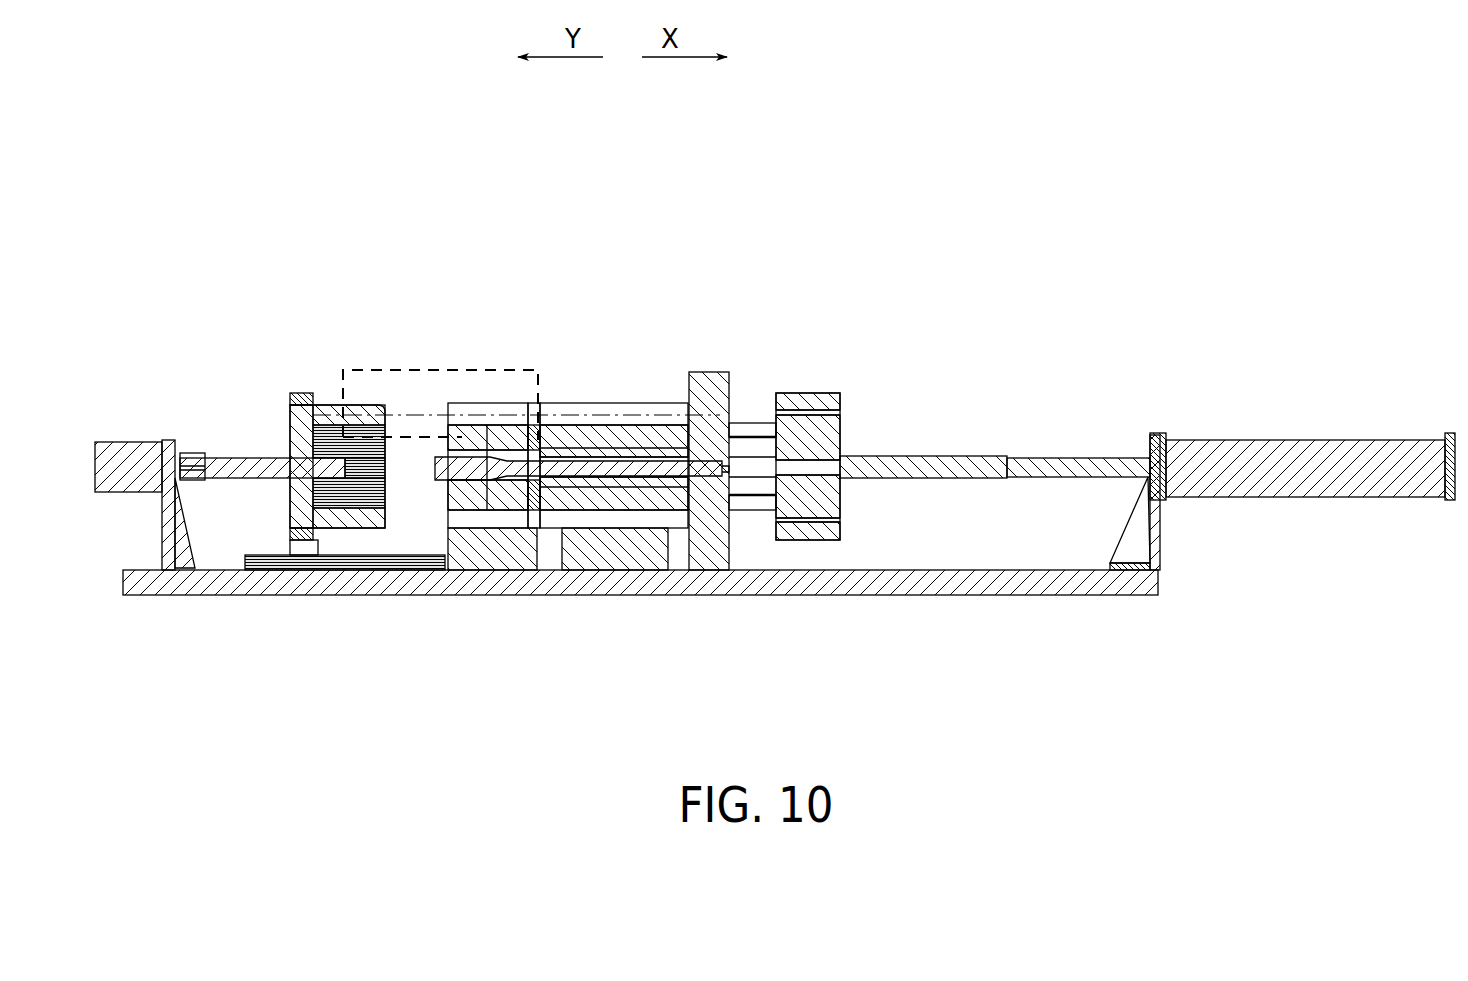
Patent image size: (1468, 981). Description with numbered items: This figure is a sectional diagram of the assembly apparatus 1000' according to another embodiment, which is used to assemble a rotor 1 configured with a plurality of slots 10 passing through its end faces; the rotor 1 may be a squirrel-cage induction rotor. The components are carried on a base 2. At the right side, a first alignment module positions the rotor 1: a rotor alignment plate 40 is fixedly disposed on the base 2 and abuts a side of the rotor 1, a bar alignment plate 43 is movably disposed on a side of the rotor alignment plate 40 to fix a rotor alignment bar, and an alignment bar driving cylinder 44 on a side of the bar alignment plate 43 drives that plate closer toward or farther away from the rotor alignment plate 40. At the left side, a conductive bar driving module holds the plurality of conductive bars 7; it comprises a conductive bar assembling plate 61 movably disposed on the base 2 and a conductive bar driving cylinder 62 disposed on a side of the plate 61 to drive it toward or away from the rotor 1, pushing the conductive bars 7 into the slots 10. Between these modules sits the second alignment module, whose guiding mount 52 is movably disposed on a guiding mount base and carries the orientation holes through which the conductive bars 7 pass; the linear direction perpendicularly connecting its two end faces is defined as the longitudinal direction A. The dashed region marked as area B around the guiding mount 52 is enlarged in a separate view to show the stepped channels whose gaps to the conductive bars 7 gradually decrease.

The assembly apparatus 1000' is at (769, 393).
The rotor 1 is at (582, 420).
The base 2 is at (1063, 597).
The conductive bars 7 is at (325, 393).
The slots 10 is at (607, 410).
The rotor alignment plate 40 is at (710, 395).
The bar alignment plate 43 is at (832, 443).
The alignment bar driving cylinder 44 is at (1314, 418).
The guiding mount 52 is at (482, 393).
The conductive bar assembling plate 61 is at (297, 493).
The conductive bar driving cylinder 62 is at (122, 419).
The longitudinal direction A is at (410, 413).
The area B is at (511, 349).